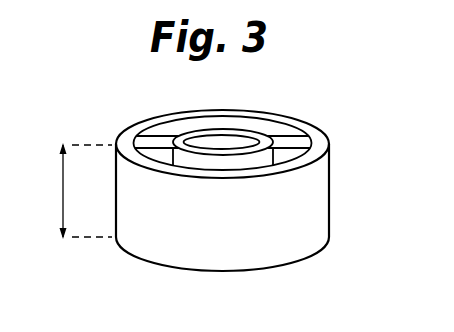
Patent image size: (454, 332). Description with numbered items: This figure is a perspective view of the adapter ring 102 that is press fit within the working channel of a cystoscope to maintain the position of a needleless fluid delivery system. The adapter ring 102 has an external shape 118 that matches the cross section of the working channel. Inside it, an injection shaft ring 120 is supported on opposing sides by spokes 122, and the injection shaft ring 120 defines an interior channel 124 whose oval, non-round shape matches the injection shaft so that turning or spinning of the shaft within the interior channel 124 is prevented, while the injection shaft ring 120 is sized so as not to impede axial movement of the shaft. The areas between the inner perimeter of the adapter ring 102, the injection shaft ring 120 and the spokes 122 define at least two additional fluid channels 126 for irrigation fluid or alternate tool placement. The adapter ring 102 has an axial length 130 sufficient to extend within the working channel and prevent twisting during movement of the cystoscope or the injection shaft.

The adapter ring 102 is at (351, 202).
The external shape 118 is at (310, 123).
The injection shaft ring 120 is at (248, 133).
The spokes 122 is at (150, 143).
The interior channel 124 is at (222, 140).
The additional fluid channels 126 is at (197, 122).
The axial length 130 is at (79, 191).